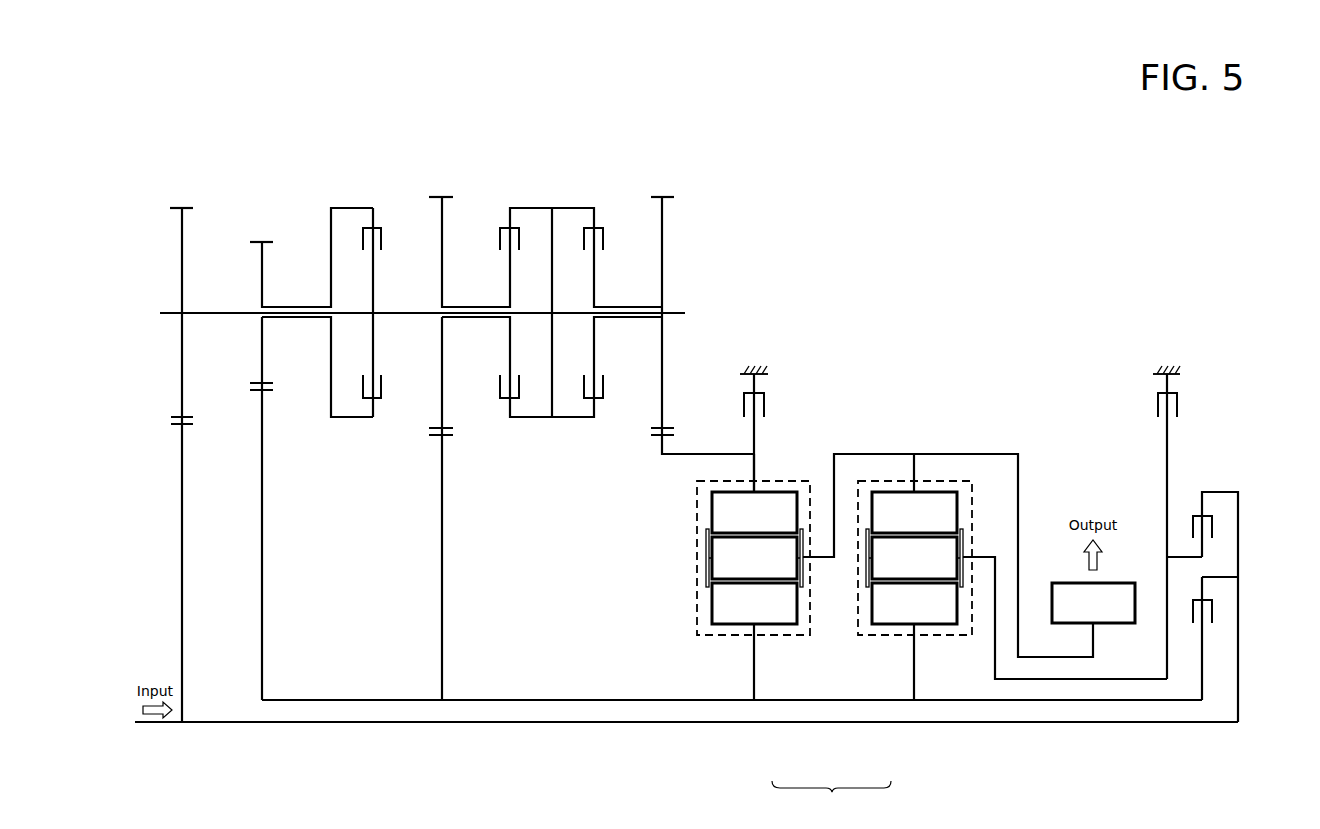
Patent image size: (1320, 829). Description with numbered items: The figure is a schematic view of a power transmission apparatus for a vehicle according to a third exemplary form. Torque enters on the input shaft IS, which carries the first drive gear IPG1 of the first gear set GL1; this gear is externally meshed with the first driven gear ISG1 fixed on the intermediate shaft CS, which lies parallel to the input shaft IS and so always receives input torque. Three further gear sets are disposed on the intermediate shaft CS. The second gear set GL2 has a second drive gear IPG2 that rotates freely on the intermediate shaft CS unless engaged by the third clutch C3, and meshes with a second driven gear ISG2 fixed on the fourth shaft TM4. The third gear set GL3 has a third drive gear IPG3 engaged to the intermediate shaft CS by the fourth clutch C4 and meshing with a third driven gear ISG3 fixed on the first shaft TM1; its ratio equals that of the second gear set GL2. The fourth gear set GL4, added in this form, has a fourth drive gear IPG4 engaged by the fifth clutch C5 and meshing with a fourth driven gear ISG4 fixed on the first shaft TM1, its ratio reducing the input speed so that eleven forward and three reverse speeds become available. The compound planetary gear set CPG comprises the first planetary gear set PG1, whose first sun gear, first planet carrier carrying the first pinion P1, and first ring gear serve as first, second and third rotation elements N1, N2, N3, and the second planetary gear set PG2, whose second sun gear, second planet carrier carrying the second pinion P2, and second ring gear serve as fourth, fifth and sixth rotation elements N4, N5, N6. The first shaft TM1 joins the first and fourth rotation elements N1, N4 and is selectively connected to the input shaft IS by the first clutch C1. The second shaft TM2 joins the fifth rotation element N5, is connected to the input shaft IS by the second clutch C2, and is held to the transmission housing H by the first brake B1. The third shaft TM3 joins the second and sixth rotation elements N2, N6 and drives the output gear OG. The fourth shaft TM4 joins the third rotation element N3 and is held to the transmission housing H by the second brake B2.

The input shaft IS is at (352, 722).
The intermediate shaft CS is at (210, 313).
The first gear set GL1 is at (182, 203).
The second gear set GL2 is at (662, 193).
The third gear set GL3 is at (442, 193).
The fourth gear set GL4 is at (262, 238).
The first drive gear IPG1 is at (182, 540).
The second drive gear IPG2 is at (662, 250).
The third drive gear IPG3 is at (442, 277).
The fourth drive gear IPG4 is at (262, 277).
The first driven gear ISG1 is at (182, 277).
The second driven gear ISG2 is at (662, 445).
The third driven gear ISG3 is at (442, 545).
The fourth driven gear ISG4 is at (262, 545).
The first clutch C1 is at (1216, 598).
The second clutch C2 is at (1216, 512).
The third clutch C3 is at (603, 222).
The fourth clutch C4 is at (499, 222).
The fifth clutch C5 is at (380, 224).
The first brake B1 is at (1182, 394).
The second brake B2 is at (768, 394).
The transmission housing H is at (755, 372).
The first shaft TM1 is at (1050, 700).
The second shaft TM2 is at (1130, 679).
The third shaft TM3 is at (874, 454).
The fourth shaft TM4 is at (756, 463).
The first planetary gear set PG1 is at (791, 643).
The second planetary gear set PG2 is at (874, 643).
The compound planetary gear set CPG is at (831, 796).
The first rotation element N1 is at (754, 641).
The second rotation element N2 is at (706, 583).
The third rotation element N3 is at (754, 512).
The fourth rotation element N4 is at (914, 641).
The fifth rotation element N5 is at (866, 583).
The sixth rotation element N6 is at (914, 512).
The first pinion P1 is at (754, 558).
The second pinion P2 is at (914, 558).
The output gear OG is at (1093, 603).